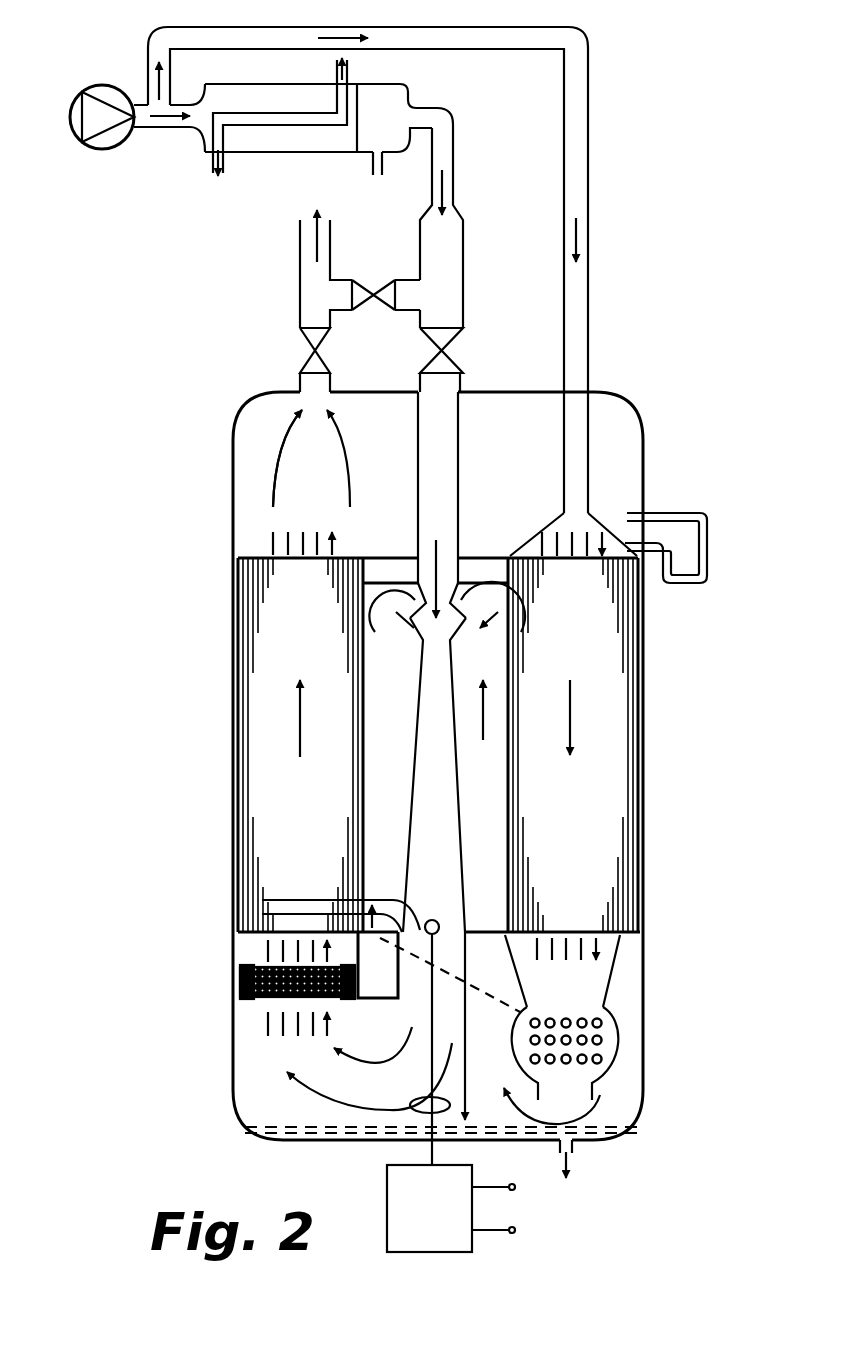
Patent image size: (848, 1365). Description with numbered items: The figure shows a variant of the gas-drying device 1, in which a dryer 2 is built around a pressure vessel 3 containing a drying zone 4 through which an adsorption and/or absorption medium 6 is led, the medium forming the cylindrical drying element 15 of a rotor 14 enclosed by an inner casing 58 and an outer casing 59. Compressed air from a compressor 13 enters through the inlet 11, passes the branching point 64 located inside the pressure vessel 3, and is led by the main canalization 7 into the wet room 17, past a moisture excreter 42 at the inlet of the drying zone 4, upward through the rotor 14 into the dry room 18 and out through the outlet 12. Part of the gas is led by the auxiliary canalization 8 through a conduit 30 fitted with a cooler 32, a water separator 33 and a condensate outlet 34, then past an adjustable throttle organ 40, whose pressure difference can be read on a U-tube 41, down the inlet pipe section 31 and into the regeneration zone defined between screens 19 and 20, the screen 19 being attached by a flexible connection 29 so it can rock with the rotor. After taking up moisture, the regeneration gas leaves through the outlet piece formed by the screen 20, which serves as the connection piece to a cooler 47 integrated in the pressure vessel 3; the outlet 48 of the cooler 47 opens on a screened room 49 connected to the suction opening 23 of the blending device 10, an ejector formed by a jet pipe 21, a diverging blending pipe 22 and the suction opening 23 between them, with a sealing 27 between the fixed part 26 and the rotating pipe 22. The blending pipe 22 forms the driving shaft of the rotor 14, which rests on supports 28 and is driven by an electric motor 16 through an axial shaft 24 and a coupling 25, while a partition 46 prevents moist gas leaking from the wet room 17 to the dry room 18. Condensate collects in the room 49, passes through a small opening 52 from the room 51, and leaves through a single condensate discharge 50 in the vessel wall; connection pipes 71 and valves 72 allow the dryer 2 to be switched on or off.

The device 1 is at (113, 1108).
The dryer 2 is at (226, 447).
The pressure vessel 3 is at (665, 437).
The drying zone 4 is at (268, 757).
The adsorption and/or absorption medium 6 is at (595, 841).
The main canalization 7 is at (465, 392).
The auxiliary canalization 8 is at (593, 302).
The blending device 10 is at (486, 655).
The inlet 11 is at (135, 128).
The outlet 12 is at (300, 228).
The compressor 13 is at (122, 92).
The rotor 14 is at (238, 660).
The drying element 15 is at (280, 688).
The electric motor 16 is at (473, 1212).
The wet room 17 is at (240, 1040).
The dry room 18 is at (264, 410).
The screen 19 is at (521, 543).
The screen 20 is at (616, 972).
The jet pipe 21 is at (448, 565).
The blending pipe 22 is at (457, 810).
The suction opening 23 is at (392, 570).
The axial shaft 24 is at (412, 1110).
The coupling 25 is at (395, 940).
The fixed part of the ejector 26 is at (460, 487).
The sealing 27 is at (472, 570).
The supports 28 is at (272, 906).
The flexible connection 29 is at (589, 505).
The conduit 30 is at (458, 112).
The inlet pipe section 31 is at (442, 410).
The cooler 32 is at (273, 150).
The water separator 33 is at (412, 87).
The condensate outlet 34 is at (384, 174).
The adjustable throttle organ 40 is at (578, 352).
The U-tube 41 is at (696, 538).
The moisture excreter 42 is at (240, 976).
The partition 46 is at (236, 586).
The cooler 47 is at (600, 1063).
The outlet of the cooler 48 is at (592, 1100).
The screened room 49 is at (497, 997).
The condensate discharge 50 is at (573, 1143).
The room 51 is at (250, 1090).
The small opening 52 is at (470, 1120).
The inner casing 58 is at (500, 768).
The outer casing 59 is at (638, 716).
The branching point 64 is at (168, 134).
The connection pipes 71 is at (338, 282).
The valves 72 is at (373, 292).